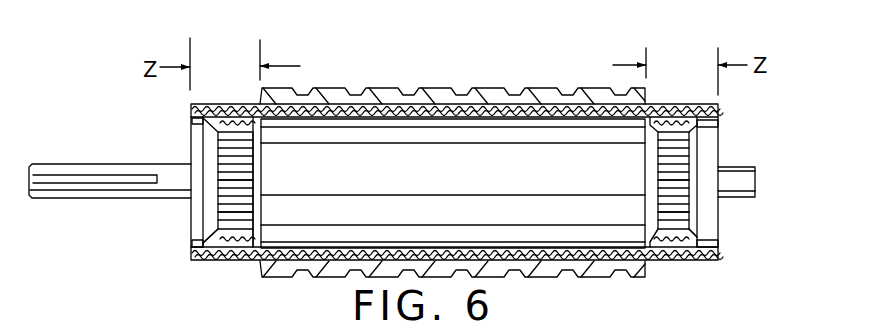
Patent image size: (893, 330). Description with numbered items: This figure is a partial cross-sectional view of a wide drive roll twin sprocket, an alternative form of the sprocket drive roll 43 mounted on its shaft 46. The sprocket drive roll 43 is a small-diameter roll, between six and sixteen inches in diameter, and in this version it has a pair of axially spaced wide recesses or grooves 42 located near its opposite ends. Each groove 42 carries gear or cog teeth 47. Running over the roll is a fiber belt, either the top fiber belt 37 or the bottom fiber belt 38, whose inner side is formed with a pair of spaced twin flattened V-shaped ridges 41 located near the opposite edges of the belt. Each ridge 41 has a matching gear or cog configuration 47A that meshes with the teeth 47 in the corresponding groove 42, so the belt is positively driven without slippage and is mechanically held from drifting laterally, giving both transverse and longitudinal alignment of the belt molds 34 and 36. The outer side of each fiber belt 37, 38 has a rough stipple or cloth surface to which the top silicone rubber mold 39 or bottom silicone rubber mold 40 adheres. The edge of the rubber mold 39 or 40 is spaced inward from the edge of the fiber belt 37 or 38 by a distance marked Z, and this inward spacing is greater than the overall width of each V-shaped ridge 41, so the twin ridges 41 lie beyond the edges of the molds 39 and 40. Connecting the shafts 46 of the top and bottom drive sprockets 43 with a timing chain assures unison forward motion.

The belt mold 34 is at (452, 149).
The belt mold 36 is at (372, 80).
The top fiber belt 37 is at (453, 181).
The bottom fiber belt 38 is at (500, 120).
The top silicone rubber mold 39 is at (457, 152).
The bottom silicone rubber mold 40 is at (435, 100).
The V-shaped ridge 41 is at (233, 118).
The groove 42 is at (222, 176).
The sprocket drive roll 43 is at (338, 190).
The shaft 46 is at (110, 182).
The gear or cog teeth 47 is at (232, 201).
The gear or cog teeth 47A is at (222, 216).